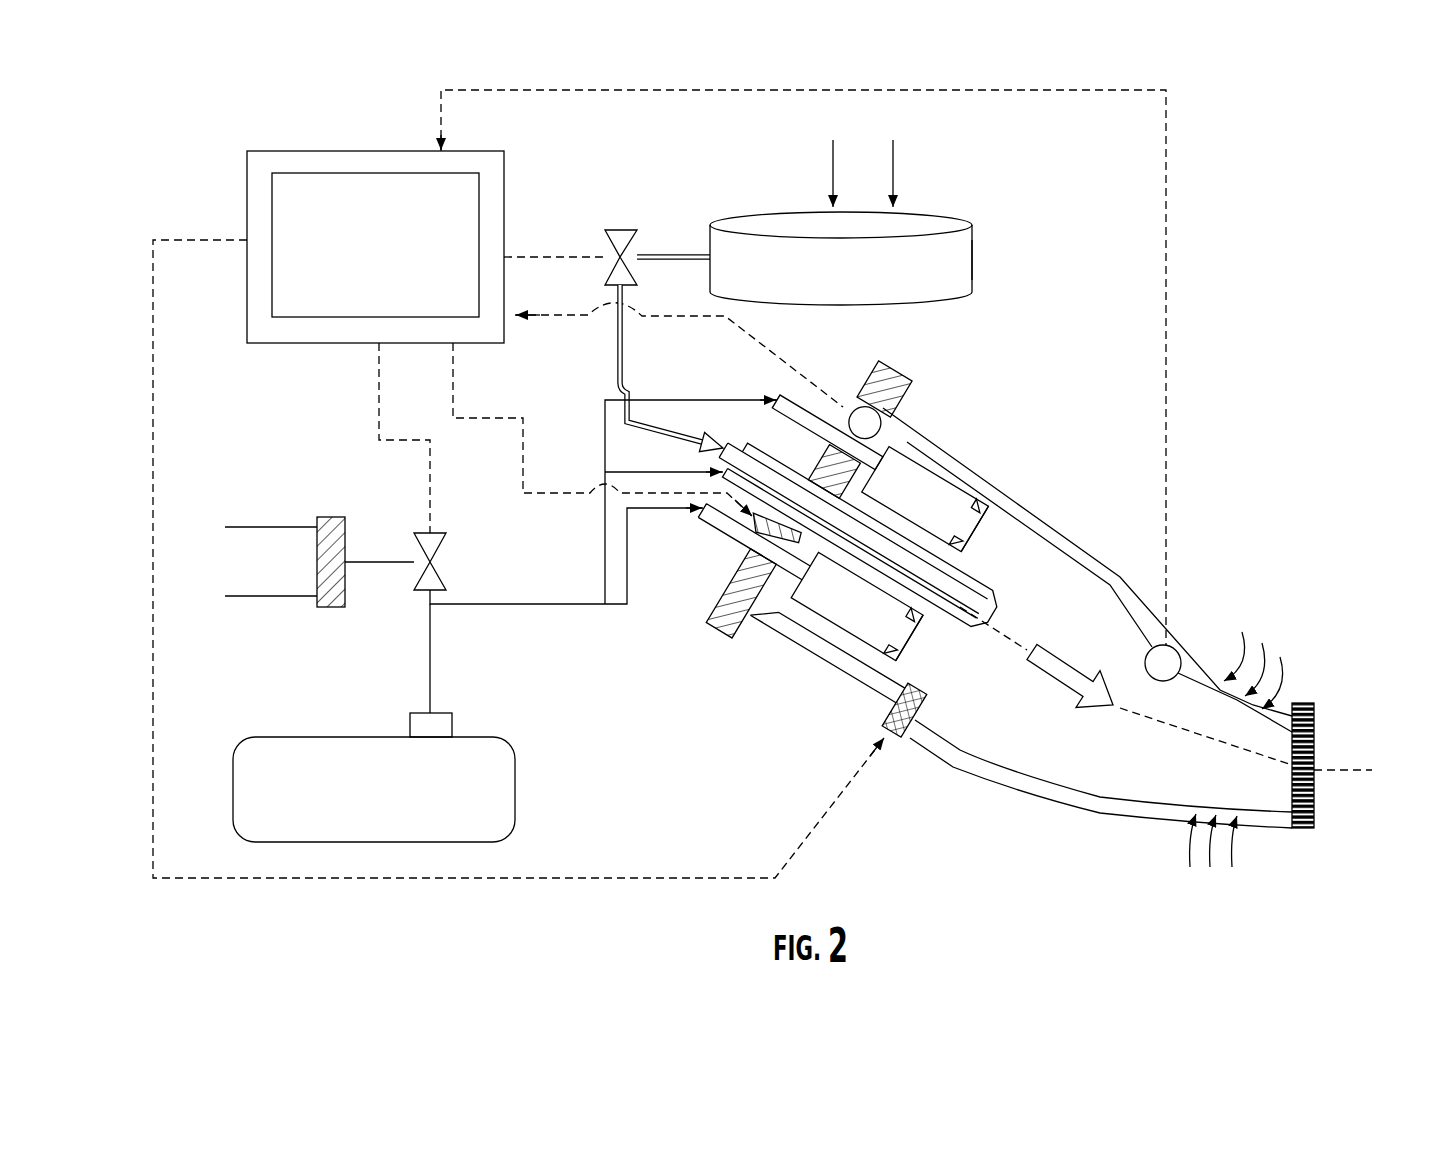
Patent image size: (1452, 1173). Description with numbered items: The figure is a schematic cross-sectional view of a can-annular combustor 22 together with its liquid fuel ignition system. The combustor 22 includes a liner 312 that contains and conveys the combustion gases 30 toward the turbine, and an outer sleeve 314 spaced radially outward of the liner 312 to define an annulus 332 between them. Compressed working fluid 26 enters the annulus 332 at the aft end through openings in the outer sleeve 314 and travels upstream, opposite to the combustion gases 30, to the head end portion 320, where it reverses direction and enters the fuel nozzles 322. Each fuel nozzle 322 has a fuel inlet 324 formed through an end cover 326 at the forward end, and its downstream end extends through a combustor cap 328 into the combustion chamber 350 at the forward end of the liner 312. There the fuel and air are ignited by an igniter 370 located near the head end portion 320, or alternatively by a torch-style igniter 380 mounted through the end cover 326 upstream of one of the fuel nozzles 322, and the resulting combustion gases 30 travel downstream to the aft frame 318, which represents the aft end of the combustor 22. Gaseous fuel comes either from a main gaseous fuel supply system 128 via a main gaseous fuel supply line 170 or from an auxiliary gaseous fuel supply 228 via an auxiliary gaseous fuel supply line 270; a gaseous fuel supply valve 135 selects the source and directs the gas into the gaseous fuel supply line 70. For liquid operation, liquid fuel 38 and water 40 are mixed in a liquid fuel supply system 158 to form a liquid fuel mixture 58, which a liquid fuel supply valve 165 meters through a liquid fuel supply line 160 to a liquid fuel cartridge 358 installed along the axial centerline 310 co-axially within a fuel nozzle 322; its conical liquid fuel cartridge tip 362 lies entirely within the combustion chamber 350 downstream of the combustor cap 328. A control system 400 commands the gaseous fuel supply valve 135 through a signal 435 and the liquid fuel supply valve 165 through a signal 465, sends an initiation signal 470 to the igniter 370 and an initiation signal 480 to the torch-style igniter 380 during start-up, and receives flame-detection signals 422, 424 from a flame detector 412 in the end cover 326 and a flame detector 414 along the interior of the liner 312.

The combustor 22 is at (988, 402).
The compressed working fluid 26 is at (1280, 678).
The combustion gases 30 is at (1065, 660).
The liquid fuel 38 is at (830, 176).
The water 40 is at (890, 176).
The liquid fuel mixture 58 is at (973, 267).
The gaseous fuel supply line 70 is at (557, 603).
The main gaseous fuel supply system 128 is at (265, 525).
The gaseous fuel supply valve 135 is at (442, 539).
The liquid fuel supply system 158 is at (976, 208).
The liquid fuel supply line 160 is at (620, 378).
The liquid fuel supply valve 165 is at (622, 230).
The main gaseous fuel supply line 170 is at (396, 559).
The auxiliary gaseous fuel supply 228 is at (283, 735).
The auxiliary gaseous fuel supply line 270 is at (428, 676).
The axial centerline 310 is at (1337, 772).
The liner 312 is at (983, 748).
The outer sleeve 314 is at (1065, 536).
The aft frame 318 is at (1315, 725).
The head end portion 320 is at (836, 639).
The fuel nozzles 322 is at (949, 521).
The fuel inlet 324 is at (703, 517).
The end cover 326 is at (718, 640).
The combustor cap 328 is at (995, 505).
The annulus 332 is at (1063, 795).
The combustion chamber 350 is at (1004, 669).
The liquid fuel cartridge 358 is at (960, 600).
The liquid fuel cartridge tip 362 is at (922, 625).
The igniter 370 is at (882, 710).
The torch-style igniter 380 is at (797, 540).
The control system 400 is at (307, 147).
The flame detector 412 is at (857, 405).
The flame detector 414 is at (1183, 665).
The signal 422 is at (590, 318).
The signal 424 is at (1168, 425).
The signal 435 is at (379, 420).
The signal 465 is at (567, 255).
The initiation signal 470 is at (612, 878).
The initiation signal 480 is at (485, 418).